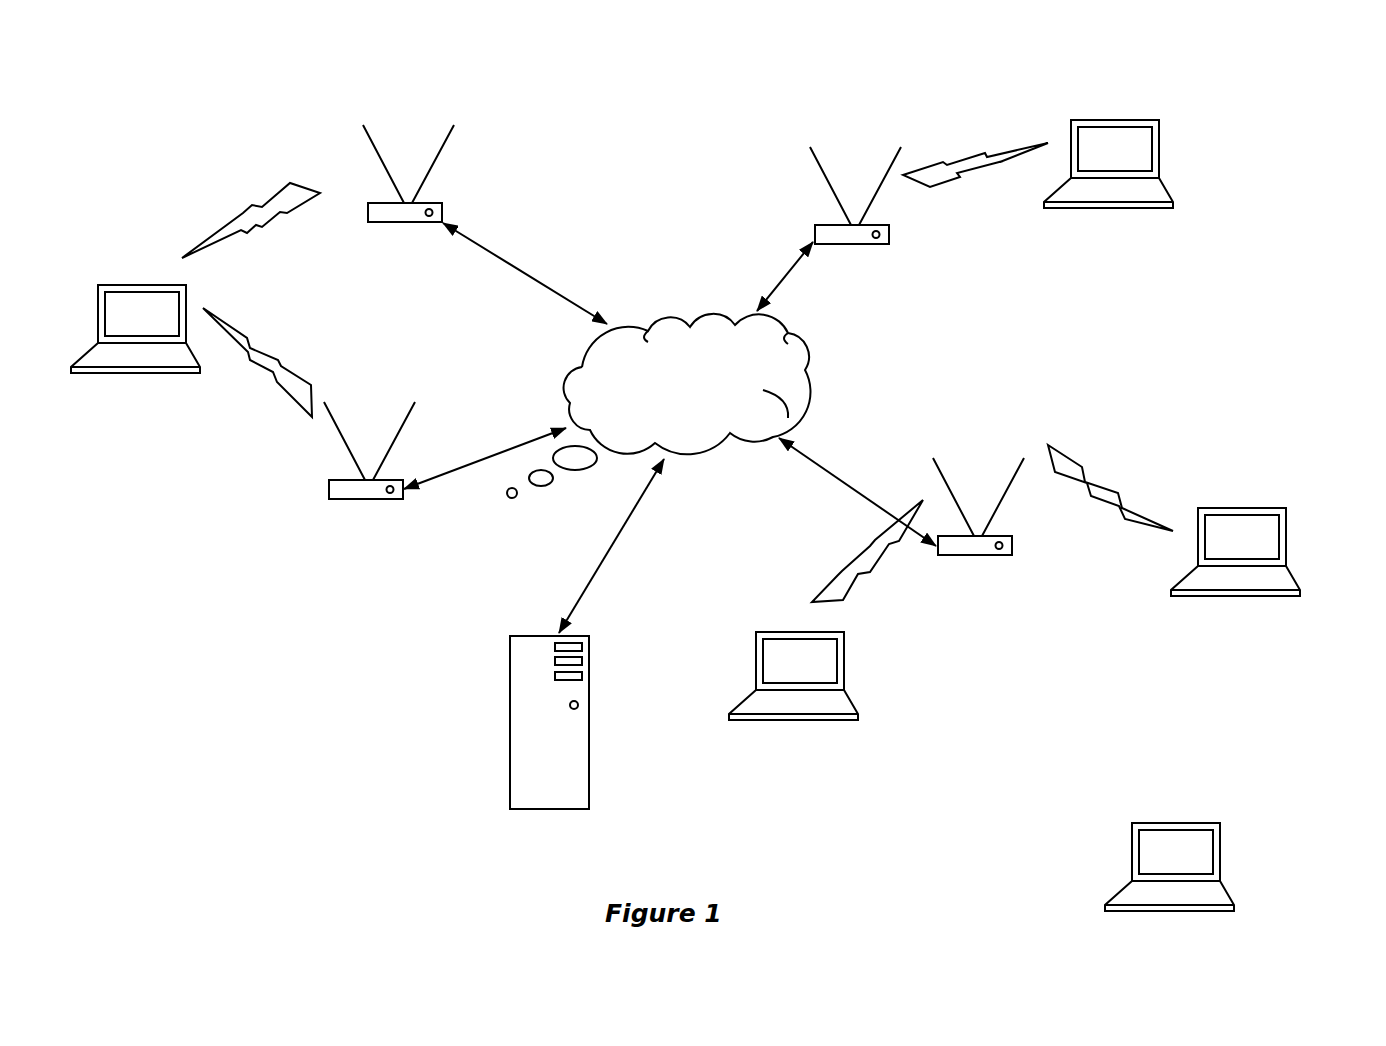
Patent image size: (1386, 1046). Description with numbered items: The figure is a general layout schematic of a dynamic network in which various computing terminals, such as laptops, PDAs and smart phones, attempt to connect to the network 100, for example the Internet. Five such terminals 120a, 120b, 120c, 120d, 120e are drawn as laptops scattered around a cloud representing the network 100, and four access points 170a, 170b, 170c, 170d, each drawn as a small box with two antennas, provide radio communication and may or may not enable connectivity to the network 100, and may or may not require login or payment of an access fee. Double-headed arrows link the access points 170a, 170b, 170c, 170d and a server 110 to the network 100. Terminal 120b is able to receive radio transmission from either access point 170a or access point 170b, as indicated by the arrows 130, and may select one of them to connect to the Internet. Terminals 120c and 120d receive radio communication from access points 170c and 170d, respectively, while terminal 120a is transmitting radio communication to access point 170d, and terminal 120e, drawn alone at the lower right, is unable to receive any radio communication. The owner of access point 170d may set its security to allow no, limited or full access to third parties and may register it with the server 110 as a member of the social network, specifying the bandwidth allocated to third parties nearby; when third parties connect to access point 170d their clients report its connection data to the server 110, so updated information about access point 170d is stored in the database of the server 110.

The network 100 is at (707, 386).
The server 110 is at (510, 670).
The computing terminal 120a is at (795, 632).
The computing terminal 120b is at (150, 288).
The computing terminal 120c is at (1097, 122).
The computing terminal 120d is at (1260, 508).
The computing terminal 120e is at (1170, 826).
The arrows 130 is at (228, 322).
The access point 170a is at (362, 498).
The access point 170b is at (395, 222).
The access point 170c is at (845, 244).
The access point 170d is at (962, 555).